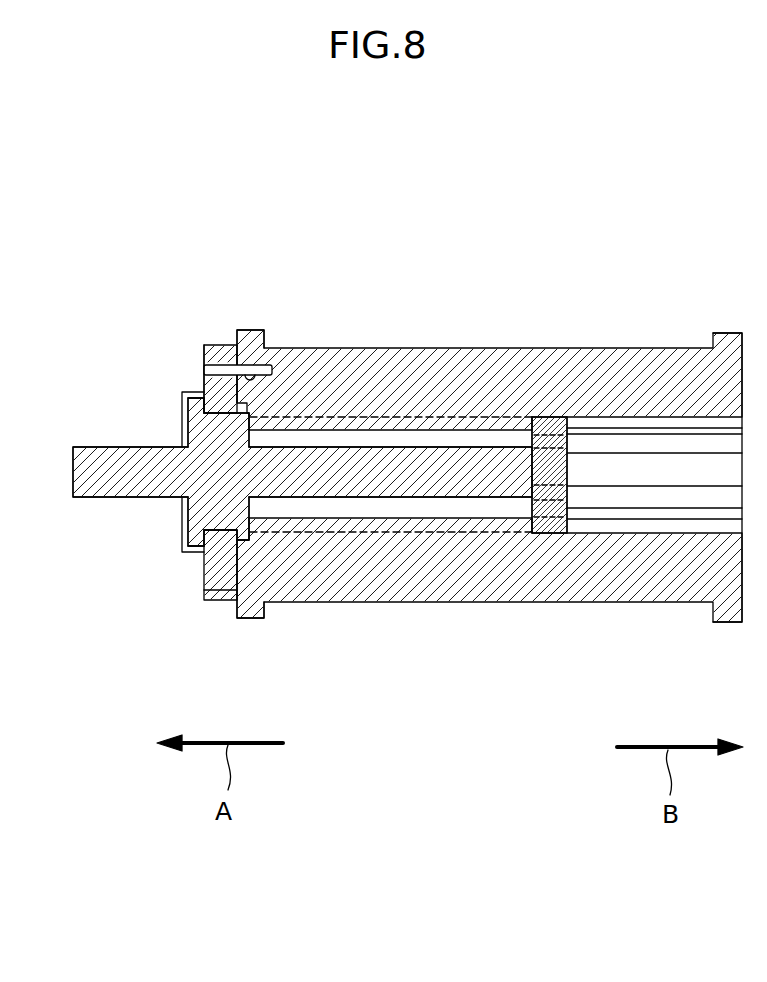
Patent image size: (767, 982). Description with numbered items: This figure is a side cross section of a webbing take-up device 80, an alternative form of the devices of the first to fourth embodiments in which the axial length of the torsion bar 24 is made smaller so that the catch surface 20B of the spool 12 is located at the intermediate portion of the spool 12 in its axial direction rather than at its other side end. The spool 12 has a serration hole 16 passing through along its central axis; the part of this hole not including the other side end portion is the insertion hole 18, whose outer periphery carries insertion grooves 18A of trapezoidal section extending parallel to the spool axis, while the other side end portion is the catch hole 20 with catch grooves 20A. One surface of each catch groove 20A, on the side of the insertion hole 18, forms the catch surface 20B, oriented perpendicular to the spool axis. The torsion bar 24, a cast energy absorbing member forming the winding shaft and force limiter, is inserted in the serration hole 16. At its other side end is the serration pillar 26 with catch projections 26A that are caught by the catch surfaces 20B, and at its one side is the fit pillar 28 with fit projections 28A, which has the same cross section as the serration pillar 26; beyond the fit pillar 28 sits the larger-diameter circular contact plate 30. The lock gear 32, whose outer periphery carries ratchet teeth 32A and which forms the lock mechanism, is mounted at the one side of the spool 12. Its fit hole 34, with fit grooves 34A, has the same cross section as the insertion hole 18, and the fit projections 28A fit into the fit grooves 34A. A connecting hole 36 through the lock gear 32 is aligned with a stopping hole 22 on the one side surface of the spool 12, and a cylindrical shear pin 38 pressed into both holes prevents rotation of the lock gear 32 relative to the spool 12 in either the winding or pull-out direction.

The spool 12 is at (498, 348).
The serration hole 16 is at (643, 463).
The insertion hole 18 is at (400, 422).
The insertion grooves 18A is at (468, 417).
The catch hole 20 is at (636, 518).
The catch grooves 20A is at (684, 415).
The catch surface 20B is at (538, 416).
The stopping hole 22 is at (264, 347).
The torsion bar 24 is at (372, 498).
The serration pillar 26 is at (540, 534).
The catch projections 26A is at (556, 412).
The fit pillar 28 is at (266, 428).
The fit projections 28A is at (184, 422).
The contact plate 30 is at (183, 393).
The lock gear 32 is at (215, 346).
The ratchet teeth 32A is at (236, 346).
The fit hole 34 is at (250, 447).
The fit grooves 34A is at (203, 413).
The connecting hole 36 is at (203, 392).
The shear pin 38 is at (205, 350).
The webbing take-up device 80 is at (192, 192).